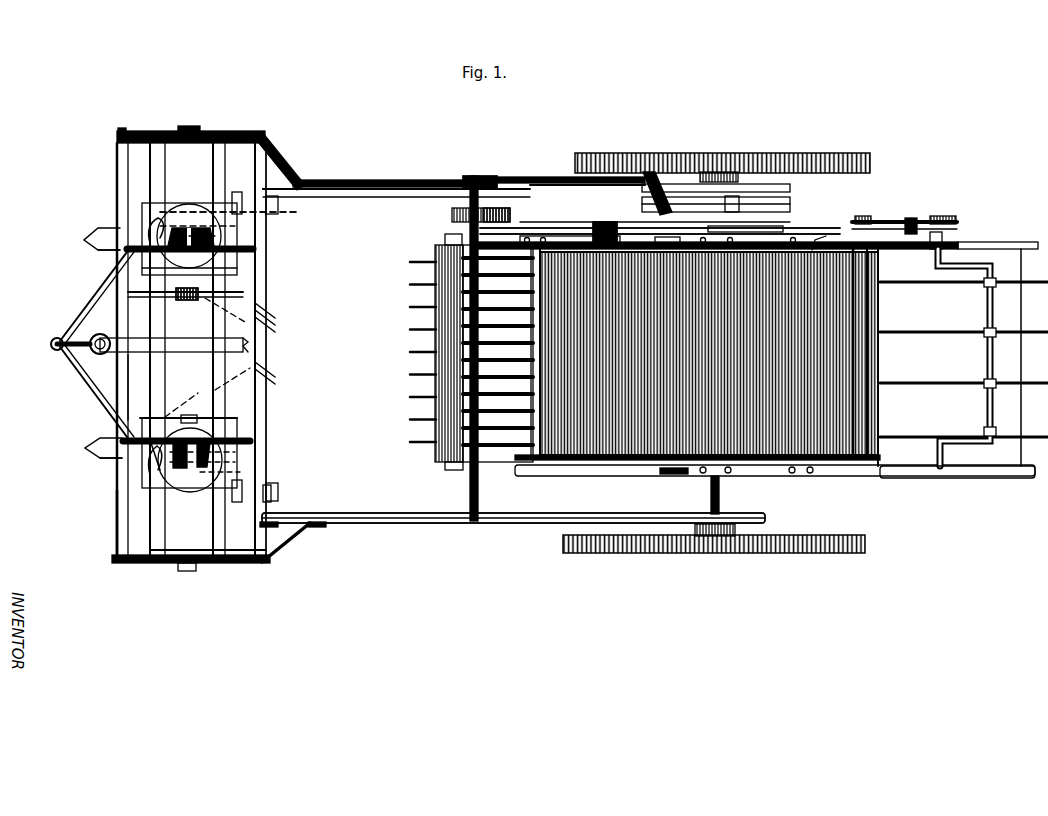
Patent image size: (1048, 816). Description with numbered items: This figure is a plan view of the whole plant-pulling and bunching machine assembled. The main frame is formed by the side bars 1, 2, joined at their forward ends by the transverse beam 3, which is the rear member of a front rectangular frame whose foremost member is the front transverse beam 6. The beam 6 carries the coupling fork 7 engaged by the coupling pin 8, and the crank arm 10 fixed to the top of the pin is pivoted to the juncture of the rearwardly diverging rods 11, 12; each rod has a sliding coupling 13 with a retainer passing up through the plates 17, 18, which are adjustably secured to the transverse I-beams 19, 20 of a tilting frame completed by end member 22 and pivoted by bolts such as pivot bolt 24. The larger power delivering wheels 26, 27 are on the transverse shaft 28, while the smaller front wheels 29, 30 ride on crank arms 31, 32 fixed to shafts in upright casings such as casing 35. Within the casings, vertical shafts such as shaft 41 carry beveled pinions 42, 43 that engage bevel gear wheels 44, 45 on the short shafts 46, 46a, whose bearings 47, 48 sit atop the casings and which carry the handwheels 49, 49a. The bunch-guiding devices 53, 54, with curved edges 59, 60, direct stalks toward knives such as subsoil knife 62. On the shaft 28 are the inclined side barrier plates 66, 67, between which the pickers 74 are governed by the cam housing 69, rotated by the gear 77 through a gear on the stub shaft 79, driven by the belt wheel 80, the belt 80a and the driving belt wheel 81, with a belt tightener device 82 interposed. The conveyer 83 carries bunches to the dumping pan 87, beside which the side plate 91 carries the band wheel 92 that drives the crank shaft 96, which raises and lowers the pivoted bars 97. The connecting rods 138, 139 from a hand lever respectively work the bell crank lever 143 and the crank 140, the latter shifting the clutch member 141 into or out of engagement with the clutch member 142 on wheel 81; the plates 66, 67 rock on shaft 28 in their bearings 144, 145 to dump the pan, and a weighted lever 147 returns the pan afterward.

The side bar 1 is at (402, 195).
The side bar 2 is at (383, 513).
The transverse beam 3 is at (268, 402).
The front transverse beam 6 is at (120, 380).
The coupling fork 7 is at (115, 356).
The coupling pin 8 is at (101, 333).
The crank arm 10 is at (56, 352).
The rod 11 is at (82, 307).
The rod 12 is at (82, 385).
The sliding coupling 13 is at (163, 466).
The plate 17 is at (230, 268).
The plate 18 is at (272, 490).
The transverse I-beam 19 is at (140, 552).
The transverse I-beam 20 is at (266, 556).
The end member 22 is at (203, 548).
The pivot bolt 24 is at (192, 566).
The power delivering wheel 26 is at (716, 156).
The power delivering wheel 27 is at (738, 553).
The transverse shaft 28 is at (720, 495).
The front wheel 29 is at (280, 207).
The front wheel 30 is at (280, 494).
The crank arm 31 is at (240, 218).
The crank arm 32 is at (242, 472).
The upright casing 35 is at (146, 203).
The vertical shaft 41 is at (180, 468).
The beveled pinion 42 is at (212, 237).
The beveled pinion 43 is at (212, 457).
The bevel gear wheel 44 is at (212, 247).
The bevel gear wheel 45 is at (218, 440).
The short shaft 46 is at (193, 262).
The short shaft 46a is at (190, 418).
The bearing 47 is at (182, 232).
The bearing 48 is at (157, 502).
The handwheel 49 is at (130, 252).
The handwheel 49a is at (255, 440).
The bunch-guiding device 53 is at (100, 233).
The bunch-guiding device 54 is at (110, 447).
The curved edge 59 is at (92, 239).
The curved edge 60 is at (88, 446).
The subsoil knife 62 is at (142, 421).
The side barrier plate 66 is at (445, 237).
The side barrier plate 67 is at (447, 468).
The cam housing 69 is at (432, 330).
The picker 74 is at (413, 383).
The gear 77 is at (452, 214).
The stub shaft 79 is at (498, 223).
The belt wheel 80 is at (567, 230).
The belt 80a is at (562, 238).
The driving belt wheel 81 is at (710, 220).
The belt tightener device 82 is at (603, 222).
The conveyer 83 is at (816, 240).
The dumping pan 87 is at (794, 357).
The side plate 91 is at (933, 249).
The band wheel 92 is at (956, 233).
The crank shaft 96 is at (988, 311).
The pivoted bar 97 is at (866, 478).
The connecting rod 138 is at (424, 180).
The connecting rod 139 is at (556, 180).
The crank 140 is at (650, 182).
The clutch member 141 is at (688, 212).
The clutch member 142 is at (760, 228).
The bell crank lever 143 is at (526, 176).
The bearing 144 is at (690, 241).
The bearing 145 is at (690, 474).
The lever 147 is at (1008, 243).